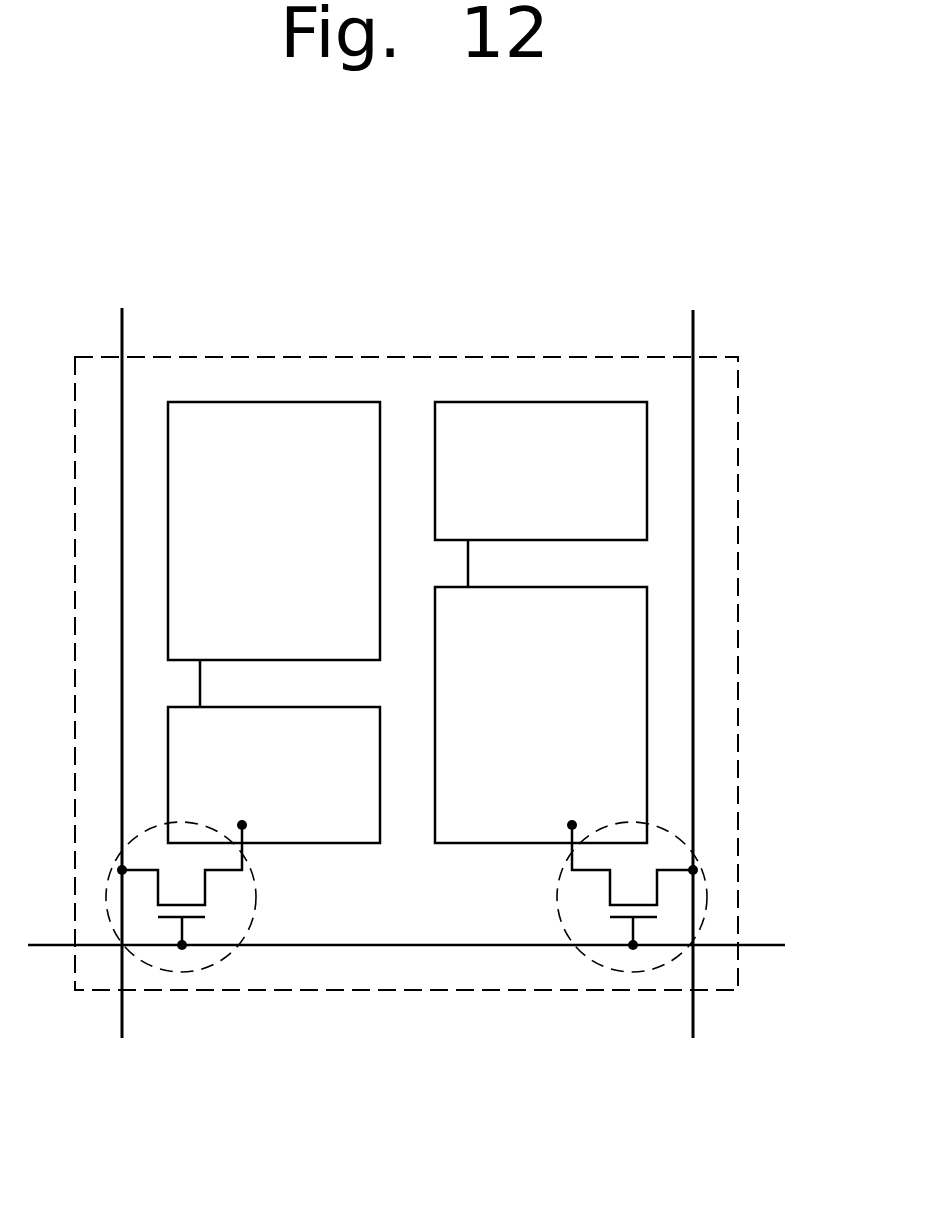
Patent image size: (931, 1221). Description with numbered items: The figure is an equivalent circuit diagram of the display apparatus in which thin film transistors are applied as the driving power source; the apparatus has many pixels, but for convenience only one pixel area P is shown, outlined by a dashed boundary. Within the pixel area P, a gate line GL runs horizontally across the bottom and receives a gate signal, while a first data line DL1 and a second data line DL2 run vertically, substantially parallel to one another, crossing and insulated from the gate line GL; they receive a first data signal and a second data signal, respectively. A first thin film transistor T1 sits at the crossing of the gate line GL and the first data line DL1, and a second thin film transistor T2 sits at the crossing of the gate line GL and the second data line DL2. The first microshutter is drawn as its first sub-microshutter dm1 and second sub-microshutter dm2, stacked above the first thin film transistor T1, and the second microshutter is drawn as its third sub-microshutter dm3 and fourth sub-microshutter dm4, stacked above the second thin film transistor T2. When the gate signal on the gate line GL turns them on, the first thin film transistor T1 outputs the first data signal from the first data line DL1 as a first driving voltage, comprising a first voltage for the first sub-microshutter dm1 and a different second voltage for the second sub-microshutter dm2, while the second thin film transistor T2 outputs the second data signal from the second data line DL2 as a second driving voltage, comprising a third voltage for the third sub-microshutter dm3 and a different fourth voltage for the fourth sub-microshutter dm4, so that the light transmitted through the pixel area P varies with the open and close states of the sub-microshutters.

The pixel area P is at (738, 528).
The first data line DL1 is at (119, 694).
The second data line DL2 is at (692, 695).
The gate line GL is at (428, 949).
The first sub-microshutter dm1 is at (274, 775).
The second sub-microshutter dm2 is at (274, 531).
The third sub-microshutter dm3 is at (541, 715).
The fourth sub-microshutter dm4 is at (541, 471).
The first thin film transistor T1 is at (222, 962).
The second thin film transistor T2 is at (587, 962).